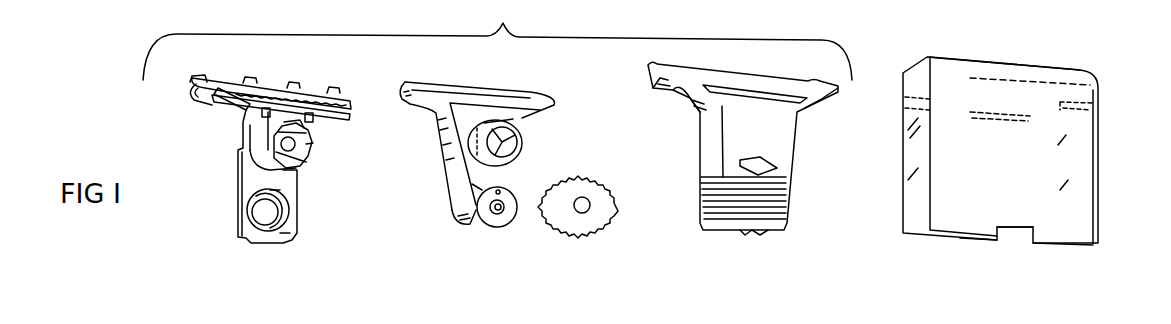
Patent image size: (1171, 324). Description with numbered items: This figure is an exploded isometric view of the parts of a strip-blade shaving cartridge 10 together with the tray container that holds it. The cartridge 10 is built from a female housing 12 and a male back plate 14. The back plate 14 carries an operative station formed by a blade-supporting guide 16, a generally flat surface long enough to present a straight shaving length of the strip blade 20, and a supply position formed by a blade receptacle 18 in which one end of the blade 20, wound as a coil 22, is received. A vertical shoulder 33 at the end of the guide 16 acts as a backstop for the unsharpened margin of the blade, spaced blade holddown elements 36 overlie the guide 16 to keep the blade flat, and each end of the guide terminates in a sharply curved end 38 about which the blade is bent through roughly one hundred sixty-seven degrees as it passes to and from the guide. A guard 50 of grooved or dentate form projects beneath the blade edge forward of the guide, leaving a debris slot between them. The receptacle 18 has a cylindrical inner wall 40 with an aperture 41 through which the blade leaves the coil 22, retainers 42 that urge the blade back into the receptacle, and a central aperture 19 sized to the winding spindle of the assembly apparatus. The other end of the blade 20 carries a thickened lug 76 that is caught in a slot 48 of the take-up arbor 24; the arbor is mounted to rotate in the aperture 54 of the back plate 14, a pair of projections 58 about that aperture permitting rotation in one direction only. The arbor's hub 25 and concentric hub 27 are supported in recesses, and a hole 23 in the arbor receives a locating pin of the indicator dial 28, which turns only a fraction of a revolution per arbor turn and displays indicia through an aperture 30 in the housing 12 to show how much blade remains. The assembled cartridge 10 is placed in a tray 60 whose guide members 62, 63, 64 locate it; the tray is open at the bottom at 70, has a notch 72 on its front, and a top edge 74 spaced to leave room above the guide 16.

The cartridge 10 is at (497, 40).
The female housing 12 is at (793, 143).
The male back plate 14 is at (237, 188).
The blade-supporting guide 16 is at (273, 88).
The blade receptacle 18 is at (313, 146).
The aperture 19 is at (253, 162).
The strip blade 20 is at (497, 83).
The coil 22 is at (523, 138).
The hole 23 is at (500, 191).
The take-up arbor 24 is at (502, 220).
The hub 25 is at (492, 218).
The concentric hub 27 is at (502, 208).
The indicator dial 28 is at (610, 213).
The aperture 30 is at (773, 167).
The vertical shoulder 33 is at (203, 99).
The blade holddown elements 36 is at (327, 103).
The sharply curved end 38 is at (218, 93).
The cylindrical inner wall 40 is at (294, 147).
The aperture 41 is at (331, 147).
The retainers 42 is at (294, 124).
The slot 48 is at (455, 208).
The guard 50 is at (317, 94).
The aperture 54 is at (263, 192).
The projections 58 is at (277, 190).
The tray 60 is at (1098, 153).
The guide member 62 is at (1100, 102).
The guide member 63 is at (997, 108).
The guide member 64 is at (905, 92).
The open bottom 70 is at (969, 256).
The notch 72 is at (1012, 243).
The top edge 74 is at (1013, 72).
The lug 76 is at (515, 125).